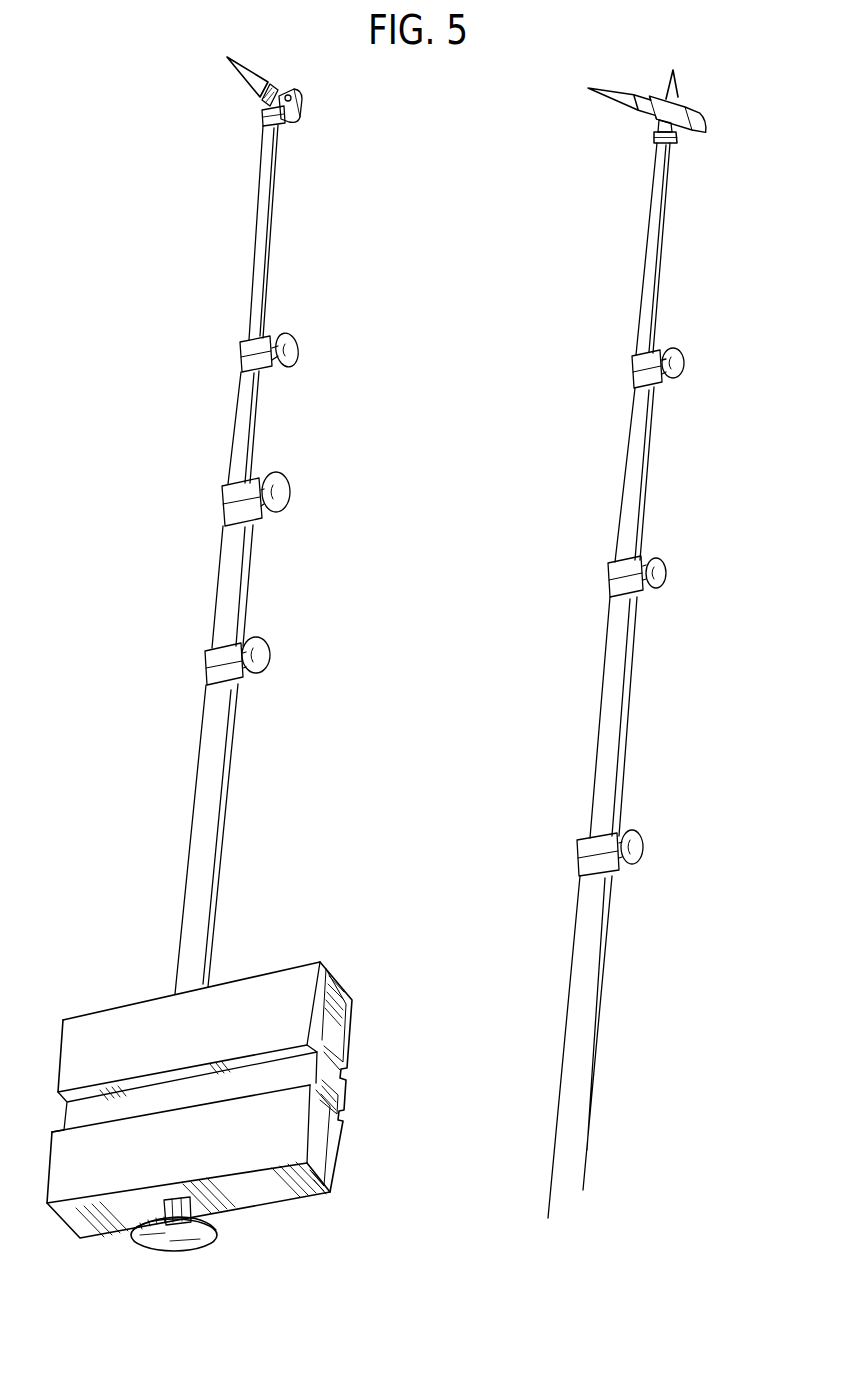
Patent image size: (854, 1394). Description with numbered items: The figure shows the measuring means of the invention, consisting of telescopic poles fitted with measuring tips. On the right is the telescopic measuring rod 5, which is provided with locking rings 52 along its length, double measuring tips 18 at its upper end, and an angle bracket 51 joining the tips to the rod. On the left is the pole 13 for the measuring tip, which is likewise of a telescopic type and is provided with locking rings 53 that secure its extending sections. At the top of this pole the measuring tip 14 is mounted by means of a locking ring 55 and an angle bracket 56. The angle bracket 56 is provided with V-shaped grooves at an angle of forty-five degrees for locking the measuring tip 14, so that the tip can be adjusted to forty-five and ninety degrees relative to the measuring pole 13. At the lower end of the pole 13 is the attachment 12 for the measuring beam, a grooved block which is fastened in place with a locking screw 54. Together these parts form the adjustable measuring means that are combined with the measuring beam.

The telescopic measuring rod 5 is at (590, 995).
The attachment for the measuring beam 12 is at (282, 985).
The pole 13 is at (230, 807).
The measuring tip 14 is at (257, 85).
The double measuring tips 18 is at (613, 89).
The angle bracket 51 is at (653, 137).
The locking rings 52 is at (638, 828).
The locking rings 53 is at (270, 647).
The locking screw 54 is at (220, 1240).
The locking ring 55 is at (293, 127).
The angle bracket 56 is at (267, 115).